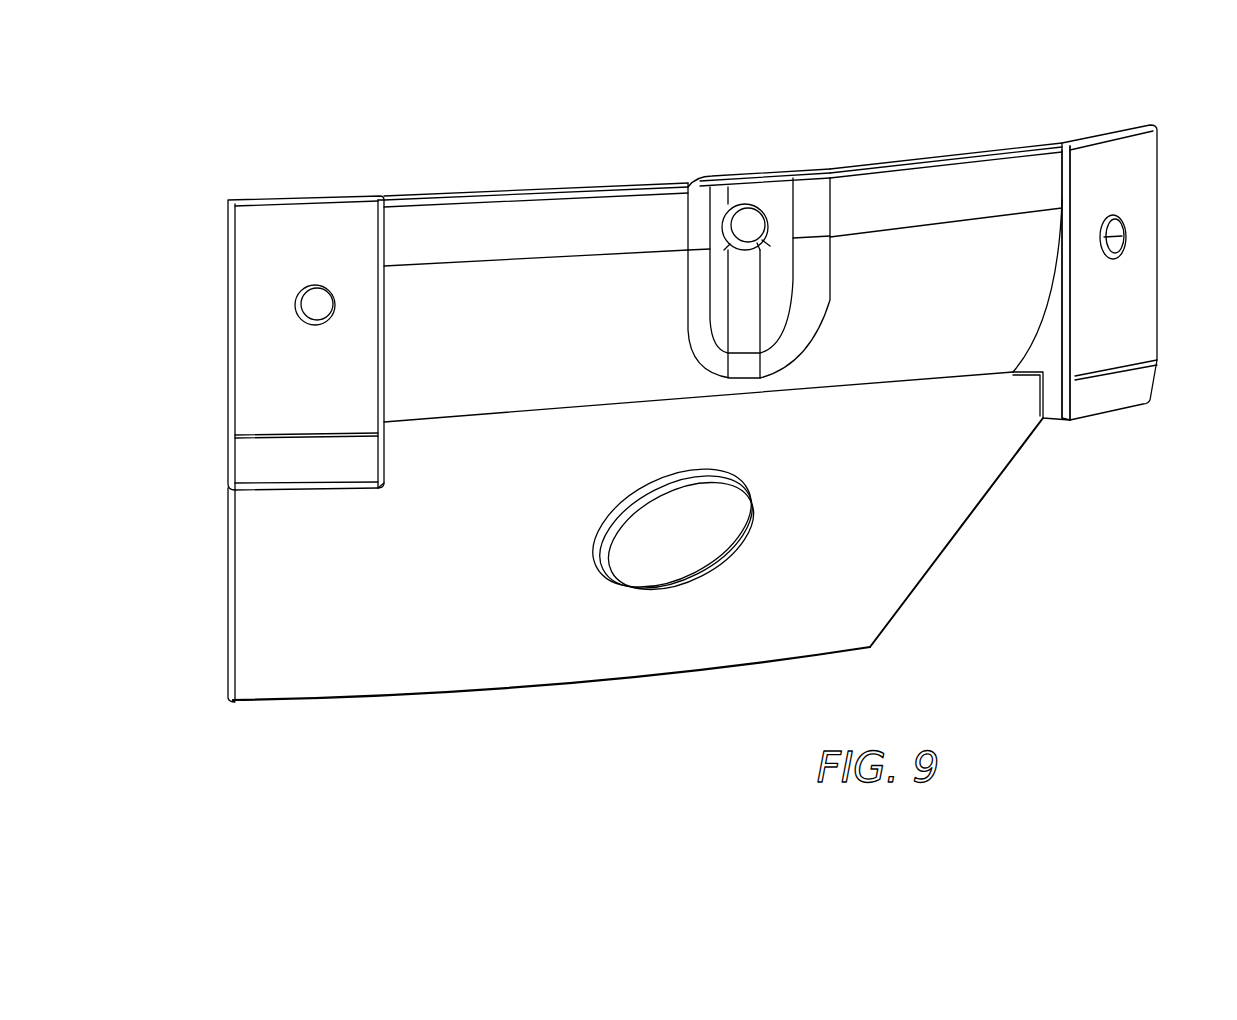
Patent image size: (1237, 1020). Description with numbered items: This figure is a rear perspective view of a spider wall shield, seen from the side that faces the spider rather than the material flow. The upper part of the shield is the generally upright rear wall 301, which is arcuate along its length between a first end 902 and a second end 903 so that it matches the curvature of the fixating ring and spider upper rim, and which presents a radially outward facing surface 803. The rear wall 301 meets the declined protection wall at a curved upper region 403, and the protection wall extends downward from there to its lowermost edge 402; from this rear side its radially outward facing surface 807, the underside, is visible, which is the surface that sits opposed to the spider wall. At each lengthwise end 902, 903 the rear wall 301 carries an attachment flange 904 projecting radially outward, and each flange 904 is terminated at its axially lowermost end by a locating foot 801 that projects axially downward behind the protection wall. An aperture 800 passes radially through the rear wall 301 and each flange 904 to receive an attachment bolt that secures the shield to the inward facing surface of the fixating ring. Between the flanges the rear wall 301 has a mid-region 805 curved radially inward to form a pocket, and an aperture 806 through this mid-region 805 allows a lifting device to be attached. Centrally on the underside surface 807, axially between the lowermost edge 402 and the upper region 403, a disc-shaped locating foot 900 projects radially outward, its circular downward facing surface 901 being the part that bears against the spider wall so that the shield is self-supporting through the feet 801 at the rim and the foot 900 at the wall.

The rear wall 301 is at (474, 192).
The mid-region 805 is at (776, 186).
The aperture 806 is at (738, 216).
The radially outward facing surface 803 is at (948, 172).
The upper region 403 is at (912, 372).
The radially outward facing surface 807 is at (635, 560).
The wall lowermost edge 402 is at (655, 692).
The first end 902 is at (228, 277).
The second end 903 is at (1130, 124).
The aperture 800 is at (1118, 238).
The attachment flange 904 is at (1140, 300).
The locating foot 801 is at (248, 462).
The locating foot 900 is at (752, 492).
The circular downward facing surface 901 is at (700, 558).